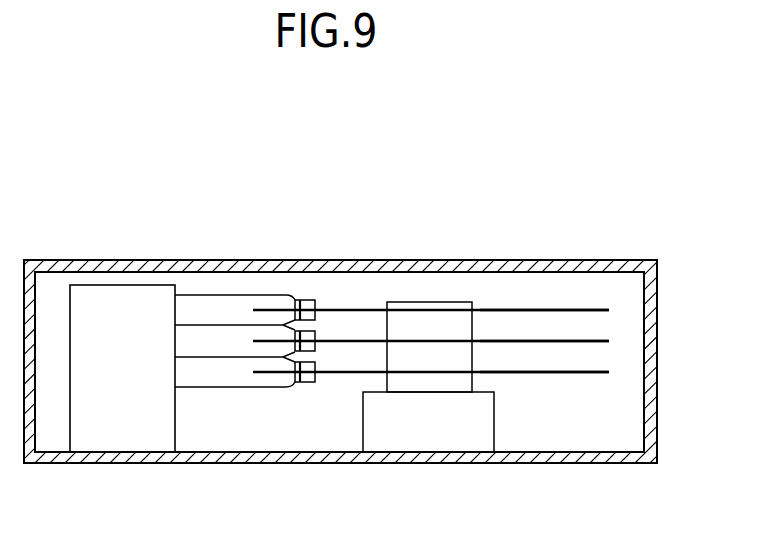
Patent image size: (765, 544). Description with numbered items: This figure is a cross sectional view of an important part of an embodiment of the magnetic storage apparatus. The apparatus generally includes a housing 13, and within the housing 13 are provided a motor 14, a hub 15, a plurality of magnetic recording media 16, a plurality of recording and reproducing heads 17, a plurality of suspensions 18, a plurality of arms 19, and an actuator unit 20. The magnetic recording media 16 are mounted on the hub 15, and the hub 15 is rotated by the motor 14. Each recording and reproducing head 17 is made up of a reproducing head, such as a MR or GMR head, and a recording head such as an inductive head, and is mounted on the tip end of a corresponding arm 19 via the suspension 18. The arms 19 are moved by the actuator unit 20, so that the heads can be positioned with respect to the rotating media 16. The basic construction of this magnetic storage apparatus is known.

The housing 13 is at (648, 440).
The motor 14 is at (432, 445).
The hub 15 is at (431, 302).
The magnetic recording media 16 is at (543, 310).
The recording and reproducing head 17 is at (315, 300).
The suspension 18 is at (293, 298).
The arm 19 is at (211, 295).
The actuator unit 20 is at (117, 443).